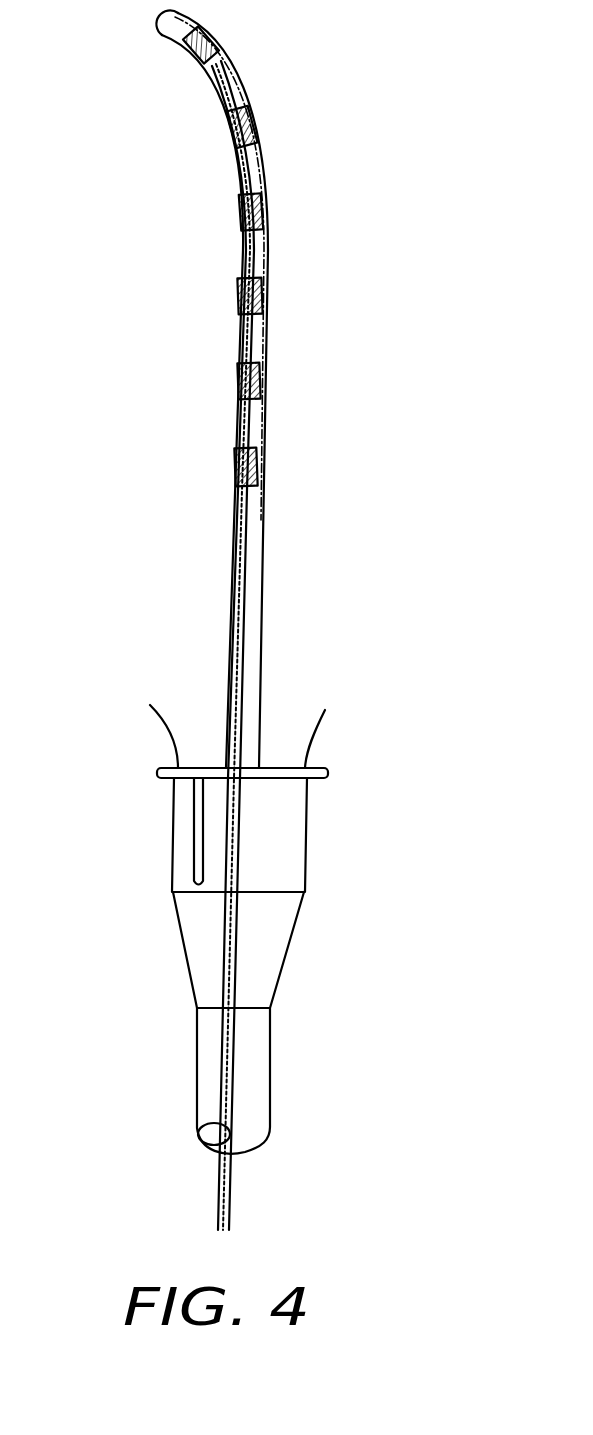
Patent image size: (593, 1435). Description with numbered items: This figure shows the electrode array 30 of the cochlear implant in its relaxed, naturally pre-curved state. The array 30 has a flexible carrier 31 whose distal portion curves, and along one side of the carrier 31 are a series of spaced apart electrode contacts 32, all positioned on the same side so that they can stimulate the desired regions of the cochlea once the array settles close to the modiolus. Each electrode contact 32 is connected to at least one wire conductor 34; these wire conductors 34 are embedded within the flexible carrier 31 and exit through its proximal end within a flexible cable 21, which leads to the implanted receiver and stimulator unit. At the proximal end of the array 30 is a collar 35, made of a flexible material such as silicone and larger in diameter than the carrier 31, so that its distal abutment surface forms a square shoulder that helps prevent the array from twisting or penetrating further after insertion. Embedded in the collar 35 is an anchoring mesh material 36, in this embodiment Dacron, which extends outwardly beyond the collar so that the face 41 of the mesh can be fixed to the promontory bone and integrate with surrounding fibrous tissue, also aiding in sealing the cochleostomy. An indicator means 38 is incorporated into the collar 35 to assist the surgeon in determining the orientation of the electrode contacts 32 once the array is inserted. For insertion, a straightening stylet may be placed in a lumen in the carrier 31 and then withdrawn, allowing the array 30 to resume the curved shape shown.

The electrode array 30 is at (402, 252).
The flexible carrier 31 is at (263, 578).
The electrode contacts 32 is at (200, 57).
The wire conductor 34 is at (225, 1193).
The collar 35 is at (307, 878).
The anchoring mesh material 36 is at (327, 773).
The indicator means 38 is at (193, 855).
The face of the mesh 41 is at (150, 705).
The flexible cable 21 is at (270, 1080).